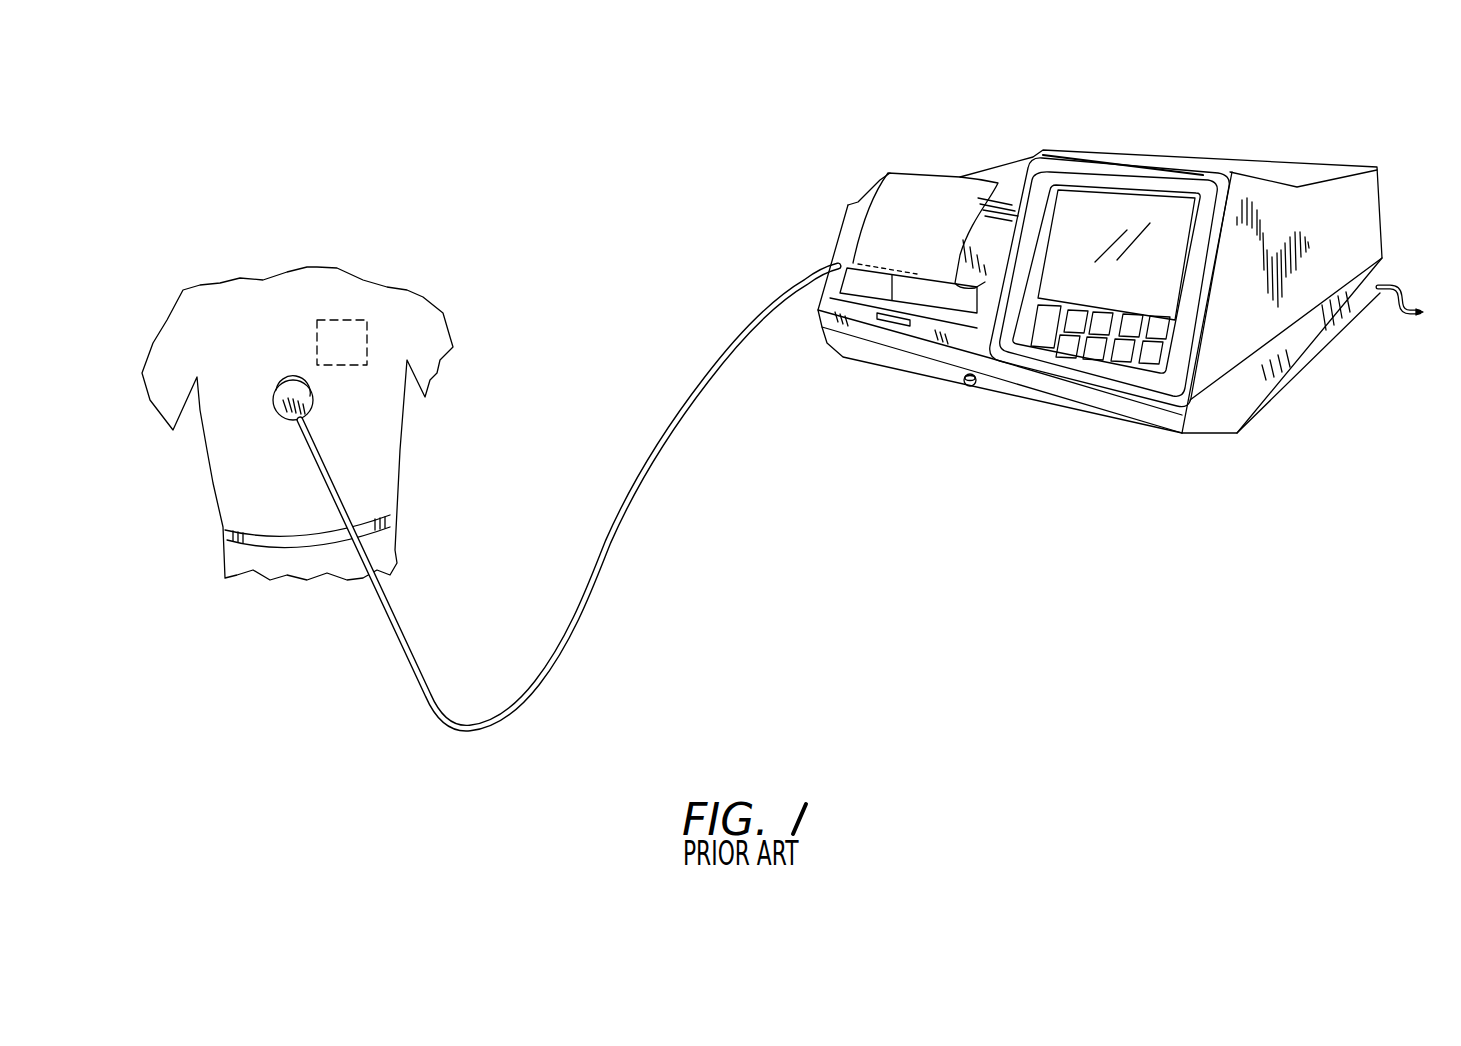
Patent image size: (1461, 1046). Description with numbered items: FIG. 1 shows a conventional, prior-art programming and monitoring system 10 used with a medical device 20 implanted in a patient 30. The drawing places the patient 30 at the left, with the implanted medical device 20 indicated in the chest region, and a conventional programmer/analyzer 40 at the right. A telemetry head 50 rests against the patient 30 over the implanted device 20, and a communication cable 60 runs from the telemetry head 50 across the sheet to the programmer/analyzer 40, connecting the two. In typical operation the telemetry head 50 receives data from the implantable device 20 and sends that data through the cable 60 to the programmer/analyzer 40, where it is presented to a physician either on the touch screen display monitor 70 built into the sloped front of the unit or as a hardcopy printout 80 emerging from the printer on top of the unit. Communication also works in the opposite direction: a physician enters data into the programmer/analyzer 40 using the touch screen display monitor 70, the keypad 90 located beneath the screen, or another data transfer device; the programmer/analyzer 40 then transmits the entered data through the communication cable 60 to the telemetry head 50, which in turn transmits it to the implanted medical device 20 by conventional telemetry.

The programming and monitoring system 10 is at (827, 96).
The medical device 20 is at (317, 352).
The patient 30 is at (175, 305).
The programmer/analyzer 40 is at (1157, 150).
The telemetry head 50 is at (277, 388).
The communication cable 60 is at (646, 481).
The touch screen display monitor 70 is at (1178, 223).
The hardcopy printout 80 is at (865, 230).
The keypad 90 is at (1153, 362).